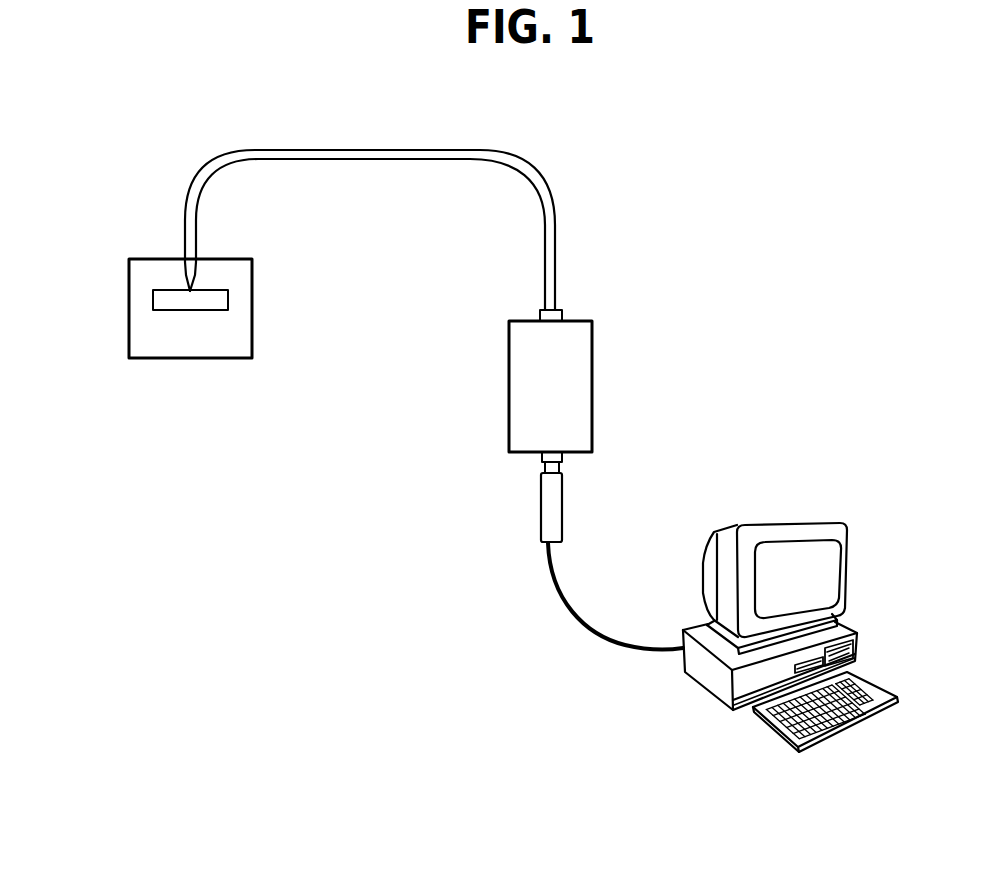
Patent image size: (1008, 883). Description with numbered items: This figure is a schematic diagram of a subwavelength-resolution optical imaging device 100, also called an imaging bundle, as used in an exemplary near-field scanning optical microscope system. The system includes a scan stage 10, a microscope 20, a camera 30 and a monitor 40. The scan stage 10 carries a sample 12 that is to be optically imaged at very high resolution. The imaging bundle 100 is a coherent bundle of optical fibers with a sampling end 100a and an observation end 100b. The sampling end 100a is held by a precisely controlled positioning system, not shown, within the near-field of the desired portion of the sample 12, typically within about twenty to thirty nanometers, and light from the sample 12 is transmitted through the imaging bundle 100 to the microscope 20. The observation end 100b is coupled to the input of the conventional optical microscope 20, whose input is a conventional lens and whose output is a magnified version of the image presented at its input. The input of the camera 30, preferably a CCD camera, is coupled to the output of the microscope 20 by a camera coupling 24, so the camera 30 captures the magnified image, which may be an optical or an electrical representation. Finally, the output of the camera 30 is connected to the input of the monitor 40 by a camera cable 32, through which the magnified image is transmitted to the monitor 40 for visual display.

The scan stage 10 is at (120, 331).
The sample 12 is at (170, 290).
The microscope 20 is at (604, 362).
The camera coupling 24 is at (542, 458).
The camera 30 is at (530, 528).
The camera cable 32 is at (602, 630).
The monitor 40 is at (837, 513).
The subwavelength-resolution optical imaging device 100 is at (399, 139).
The sampling end 100a is at (190, 292).
The observation end 100b is at (538, 313).